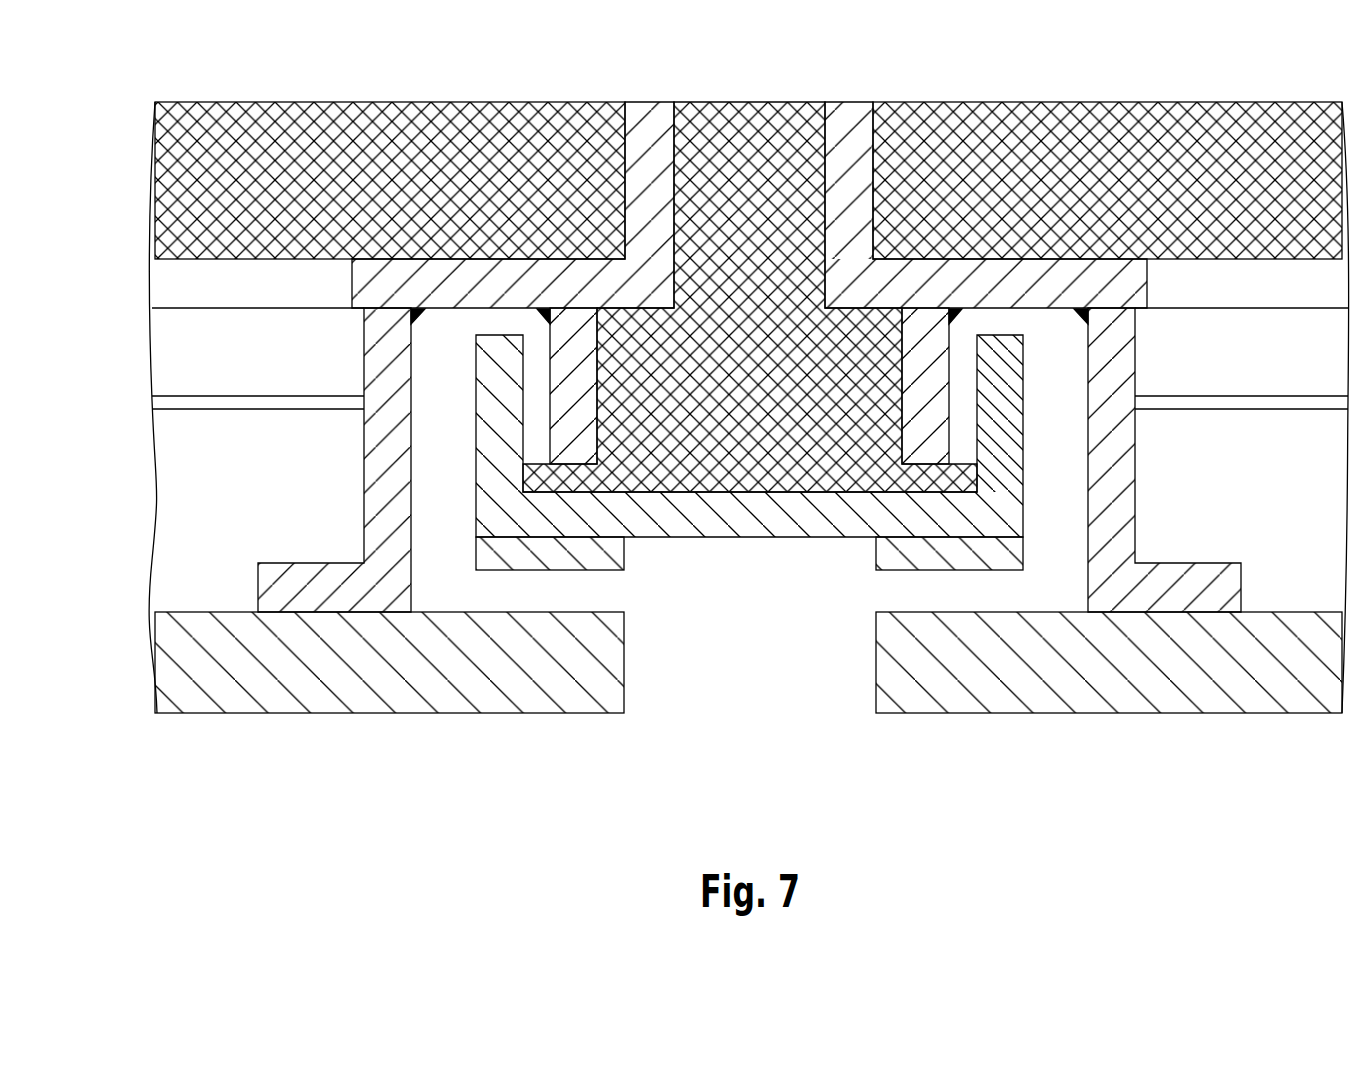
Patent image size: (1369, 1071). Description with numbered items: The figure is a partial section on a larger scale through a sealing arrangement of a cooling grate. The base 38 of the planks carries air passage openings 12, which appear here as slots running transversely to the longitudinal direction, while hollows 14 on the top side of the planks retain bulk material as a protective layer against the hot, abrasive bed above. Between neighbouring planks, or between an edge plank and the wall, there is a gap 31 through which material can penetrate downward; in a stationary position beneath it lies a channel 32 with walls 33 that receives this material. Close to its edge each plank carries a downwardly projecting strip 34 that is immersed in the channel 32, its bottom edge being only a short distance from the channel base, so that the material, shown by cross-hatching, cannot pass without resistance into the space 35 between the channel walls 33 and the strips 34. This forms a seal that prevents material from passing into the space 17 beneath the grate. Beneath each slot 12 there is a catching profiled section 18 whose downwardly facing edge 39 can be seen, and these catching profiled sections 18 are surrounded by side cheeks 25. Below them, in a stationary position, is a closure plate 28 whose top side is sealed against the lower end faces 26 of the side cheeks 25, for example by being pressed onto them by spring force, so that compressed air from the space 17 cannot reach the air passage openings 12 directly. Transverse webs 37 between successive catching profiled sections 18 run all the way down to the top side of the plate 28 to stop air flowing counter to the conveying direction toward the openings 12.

The air passage opening 12 is at (258, 283).
The hollow 14 is at (425, 165).
The space beneath the grate 17 is at (732, 767).
The catching profiled section 18 is at (218, 409).
The side cheek 25 is at (393, 478).
The lower end face 26 is at (320, 615).
The closure plate 28 is at (383, 673).
The gap 31 is at (748, 165).
The channel 32 is at (748, 515).
The channel wall 33 is at (492, 368).
The strip 34 is at (580, 360).
The space 35 is at (540, 358).
The transverse web 37 is at (198, 585).
The base 38 is at (380, 283).
The downwardly facing edge 39 is at (253, 402).